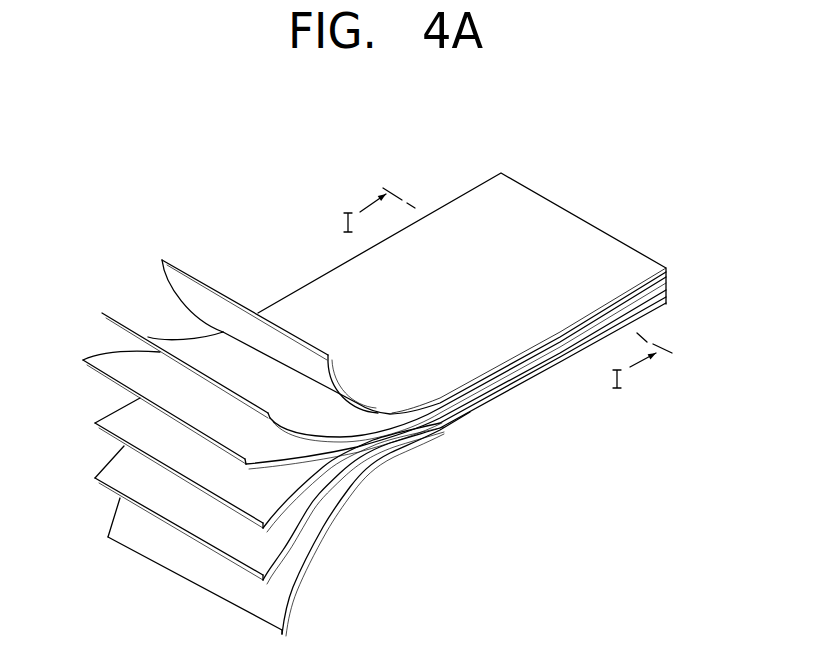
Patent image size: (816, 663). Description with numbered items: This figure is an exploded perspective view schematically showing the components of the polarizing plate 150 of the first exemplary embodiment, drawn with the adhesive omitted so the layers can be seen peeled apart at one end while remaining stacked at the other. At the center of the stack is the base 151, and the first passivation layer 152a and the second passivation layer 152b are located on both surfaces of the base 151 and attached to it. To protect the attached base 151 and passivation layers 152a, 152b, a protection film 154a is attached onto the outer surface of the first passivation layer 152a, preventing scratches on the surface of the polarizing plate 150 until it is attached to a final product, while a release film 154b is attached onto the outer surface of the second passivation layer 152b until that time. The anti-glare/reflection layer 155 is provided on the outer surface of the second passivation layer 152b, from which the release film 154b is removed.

The polarizing plate 150 is at (463, 544).
The release film 154b is at (175, 283).
The anti-glare/reflection layer 155 is at (341, 426).
The second passivation layer 152b is at (273, 447).
The base 151 is at (273, 502).
The first passivation layer 152a is at (273, 553).
The protection film 154a is at (283, 605).